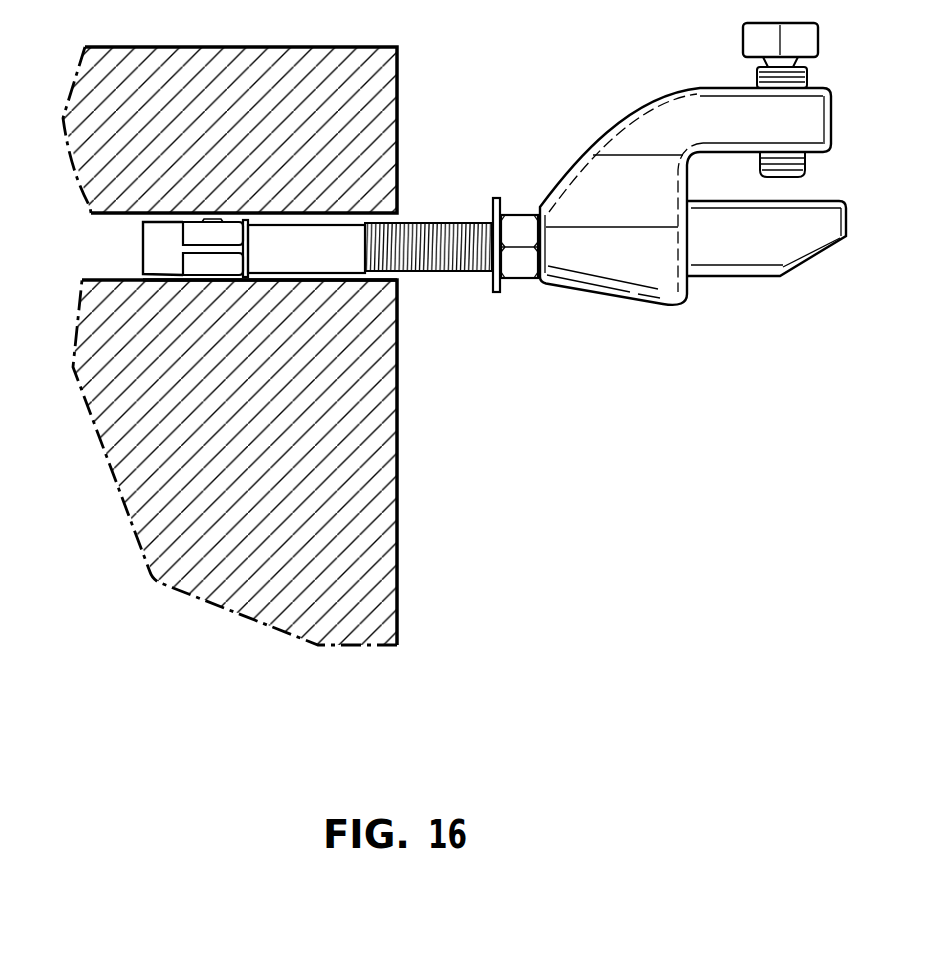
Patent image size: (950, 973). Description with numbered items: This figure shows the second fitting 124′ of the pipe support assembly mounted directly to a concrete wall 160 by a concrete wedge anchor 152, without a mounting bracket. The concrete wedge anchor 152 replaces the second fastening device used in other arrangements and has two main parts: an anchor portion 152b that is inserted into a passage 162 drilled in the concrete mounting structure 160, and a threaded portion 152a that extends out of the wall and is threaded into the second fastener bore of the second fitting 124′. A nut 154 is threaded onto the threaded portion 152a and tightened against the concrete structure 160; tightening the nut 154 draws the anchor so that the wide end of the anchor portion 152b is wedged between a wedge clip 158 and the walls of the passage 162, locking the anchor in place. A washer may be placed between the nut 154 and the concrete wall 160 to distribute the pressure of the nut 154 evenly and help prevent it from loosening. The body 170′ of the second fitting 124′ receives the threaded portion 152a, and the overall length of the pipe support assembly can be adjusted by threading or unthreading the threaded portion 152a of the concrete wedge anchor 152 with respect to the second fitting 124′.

The second fitting 124′ is at (774, 314).
The clamp body 170′ is at (585, 196).
The nut 154 is at (517, 273).
The concrete wedge anchor 152 is at (288, 246).
The threaded portion 152a is at (445, 272).
The anchor portion 152b is at (165, 256).
The wedge clip 158 is at (200, 233).
The concrete wall 160 is at (318, 503).
The passage 162 is at (193, 280).